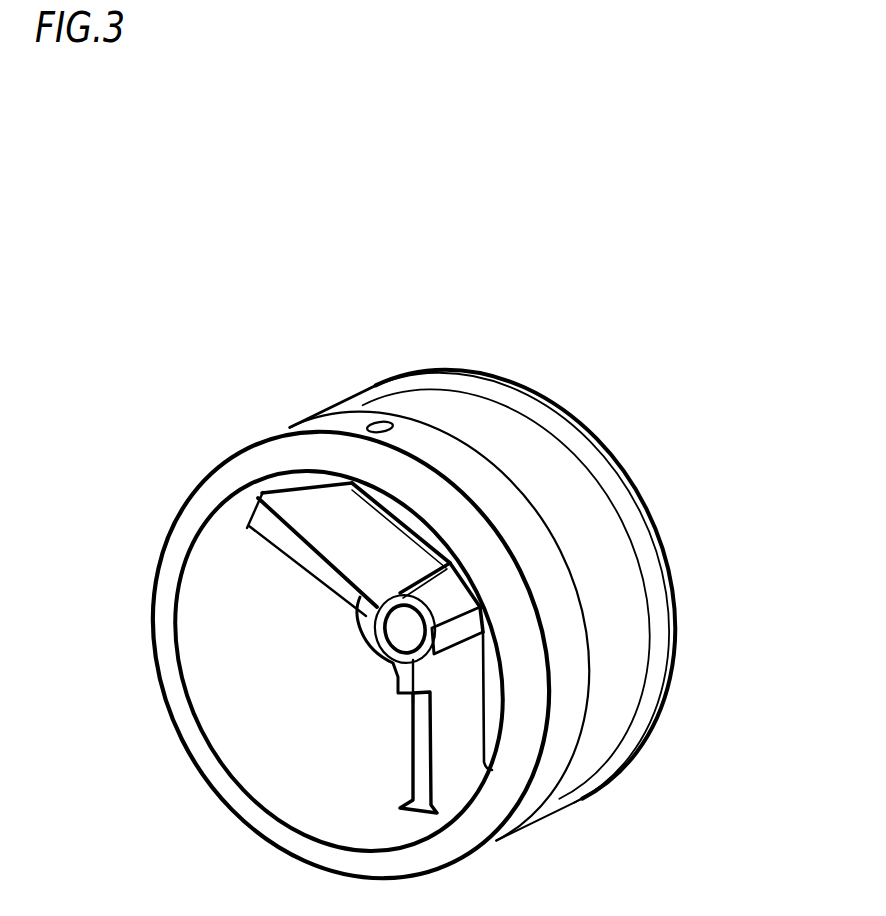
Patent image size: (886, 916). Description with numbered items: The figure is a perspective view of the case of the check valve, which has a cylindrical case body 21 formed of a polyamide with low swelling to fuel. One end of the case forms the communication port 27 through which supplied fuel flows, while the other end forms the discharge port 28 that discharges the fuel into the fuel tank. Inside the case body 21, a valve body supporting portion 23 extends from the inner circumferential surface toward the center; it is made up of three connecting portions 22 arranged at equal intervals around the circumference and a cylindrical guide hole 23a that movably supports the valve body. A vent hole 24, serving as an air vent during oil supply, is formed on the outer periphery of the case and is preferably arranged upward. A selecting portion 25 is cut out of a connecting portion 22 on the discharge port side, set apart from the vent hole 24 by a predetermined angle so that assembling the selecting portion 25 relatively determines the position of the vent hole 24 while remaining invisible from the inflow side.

The case body 21 is at (570, 678).
The connecting portion 22 is at (348, 542).
The valve body supporting portion 23 is at (232, 583).
The guide hole 23a is at (394, 634).
The vent hole 24 is at (362, 420).
The selecting portion 25 is at (420, 733).
The communication port 27 is at (610, 450).
The discharge port 28 is at (280, 797).